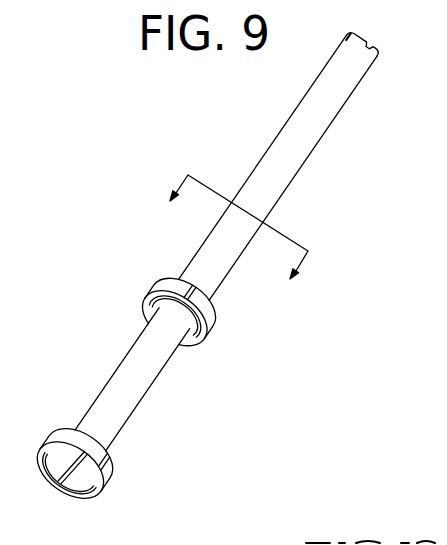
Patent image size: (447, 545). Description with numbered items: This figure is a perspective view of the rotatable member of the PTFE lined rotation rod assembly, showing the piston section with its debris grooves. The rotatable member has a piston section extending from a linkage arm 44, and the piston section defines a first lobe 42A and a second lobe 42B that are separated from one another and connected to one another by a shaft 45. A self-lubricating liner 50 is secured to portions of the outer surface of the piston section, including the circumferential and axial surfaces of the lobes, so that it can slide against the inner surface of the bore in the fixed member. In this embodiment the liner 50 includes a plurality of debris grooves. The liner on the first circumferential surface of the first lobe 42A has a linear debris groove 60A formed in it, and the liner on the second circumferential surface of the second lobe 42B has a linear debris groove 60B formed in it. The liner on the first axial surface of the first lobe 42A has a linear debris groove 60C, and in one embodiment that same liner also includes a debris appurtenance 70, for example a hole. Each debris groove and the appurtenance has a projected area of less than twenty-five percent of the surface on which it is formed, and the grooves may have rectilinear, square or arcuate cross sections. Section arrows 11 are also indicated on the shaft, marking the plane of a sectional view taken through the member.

The linkage arm 44 is at (297, 145).
The shaft 45 is at (131, 349).
The section line 11- 11 is at (227, 237).
The second lobe 42B is at (159, 325).
The first lobe 42A is at (104, 446).
The self-lubricating liner 50 is at (215, 321).
The linear debris groove 60A is at (107, 453).
The linear debris groove 60B is at (192, 344).
The linear debris groove 60C is at (86, 494).
The debris appurtenance 70 is at (73, 484).